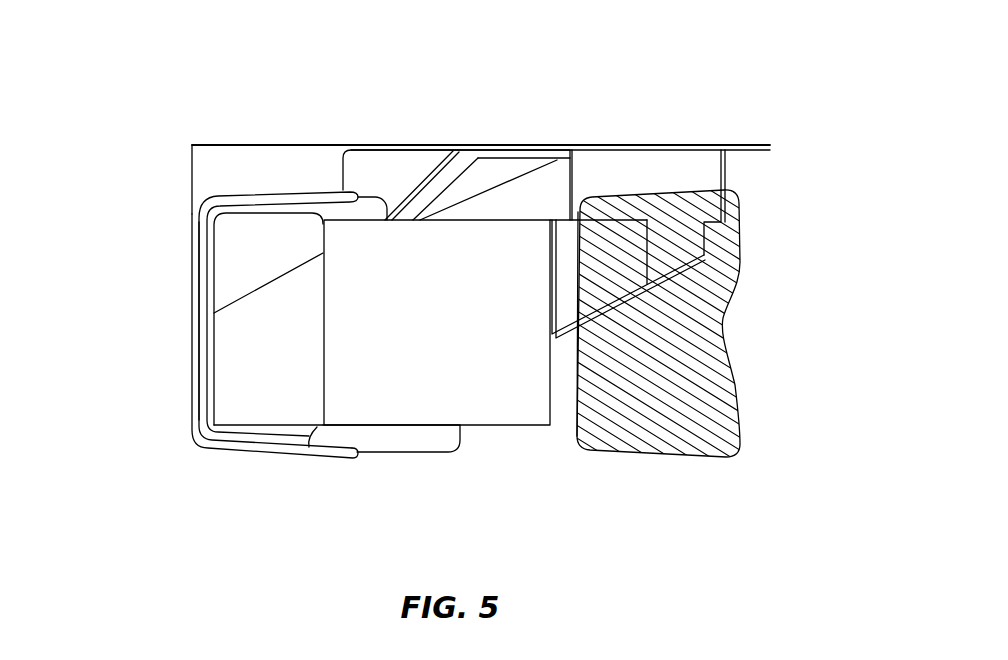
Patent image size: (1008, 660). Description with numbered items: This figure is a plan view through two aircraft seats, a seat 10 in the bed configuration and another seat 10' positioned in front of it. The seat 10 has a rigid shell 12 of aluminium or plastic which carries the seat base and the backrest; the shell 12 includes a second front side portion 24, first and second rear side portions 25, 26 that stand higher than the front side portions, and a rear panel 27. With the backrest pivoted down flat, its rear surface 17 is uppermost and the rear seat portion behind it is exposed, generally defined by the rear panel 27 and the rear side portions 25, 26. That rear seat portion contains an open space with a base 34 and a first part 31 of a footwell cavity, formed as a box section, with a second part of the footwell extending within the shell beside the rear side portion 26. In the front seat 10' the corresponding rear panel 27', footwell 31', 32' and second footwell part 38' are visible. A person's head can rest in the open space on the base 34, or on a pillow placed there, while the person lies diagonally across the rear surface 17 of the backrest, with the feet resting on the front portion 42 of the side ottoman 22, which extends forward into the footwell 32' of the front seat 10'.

The seat 10 is at (298, 131).
The another seat 10' is at (729, 323).
The shell 12 is at (186, 319).
The rear surface 17 is at (507, 400).
The ottoman 22 is at (534, 140).
The second front side portion 24 is at (370, 210).
The first rear side portion 25 is at (280, 456).
The second rear side portion 26 is at (283, 196).
The rear panel 27 is at (151, 321).
The rear panel of another seat 27' is at (593, 373).
The first part of footwell cavity 31 is at (211, 291).
The footwell of front seat 31' is at (695, 279).
The footwell of front seat 32' is at (742, 246).
The base 34 is at (245, 338).
The second part of footwell 38' is at (770, 202).
The front portion of ottoman 42 is at (611, 158).